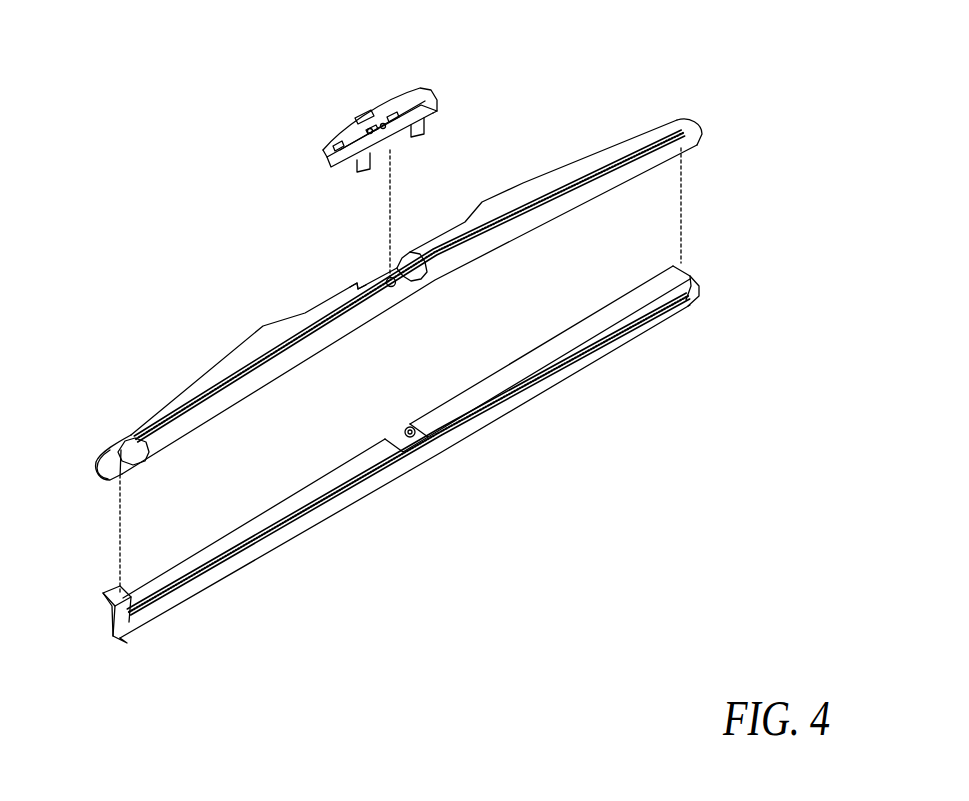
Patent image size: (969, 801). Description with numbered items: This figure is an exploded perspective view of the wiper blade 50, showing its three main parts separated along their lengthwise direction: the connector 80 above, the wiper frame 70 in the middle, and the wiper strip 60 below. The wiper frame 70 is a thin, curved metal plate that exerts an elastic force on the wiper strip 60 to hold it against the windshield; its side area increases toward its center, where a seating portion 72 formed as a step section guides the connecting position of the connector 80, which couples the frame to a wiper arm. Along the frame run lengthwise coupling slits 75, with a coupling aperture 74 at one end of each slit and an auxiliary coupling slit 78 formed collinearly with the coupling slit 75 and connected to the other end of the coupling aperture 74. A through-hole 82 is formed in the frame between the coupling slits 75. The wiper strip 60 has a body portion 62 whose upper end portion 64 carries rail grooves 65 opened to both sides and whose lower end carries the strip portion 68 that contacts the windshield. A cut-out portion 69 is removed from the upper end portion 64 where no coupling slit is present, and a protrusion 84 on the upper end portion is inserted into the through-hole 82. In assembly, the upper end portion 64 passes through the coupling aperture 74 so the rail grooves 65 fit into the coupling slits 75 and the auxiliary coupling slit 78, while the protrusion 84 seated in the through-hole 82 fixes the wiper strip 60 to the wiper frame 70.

The wiper blade 50 is at (166, 315).
The wiper strip 60 is at (522, 436).
The body portion 62 is at (111, 606).
The upper end portion 64 is at (563, 347).
The rail grooves 65 is at (422, 450).
The strip portion 68 is at (610, 350).
The cut-out portion 69 is at (409, 424).
The wiper frame 70 is at (702, 150).
The seating portion 72 is at (365, 281).
The coupling aperture 74 is at (420, 252).
The coupling slits 75 is at (587, 172).
The auxiliary coupling slit 78 is at (110, 453).
The connector 80 is at (352, 98).
The through-hole 82 is at (394, 289).
The protrusion 84 is at (409, 431).